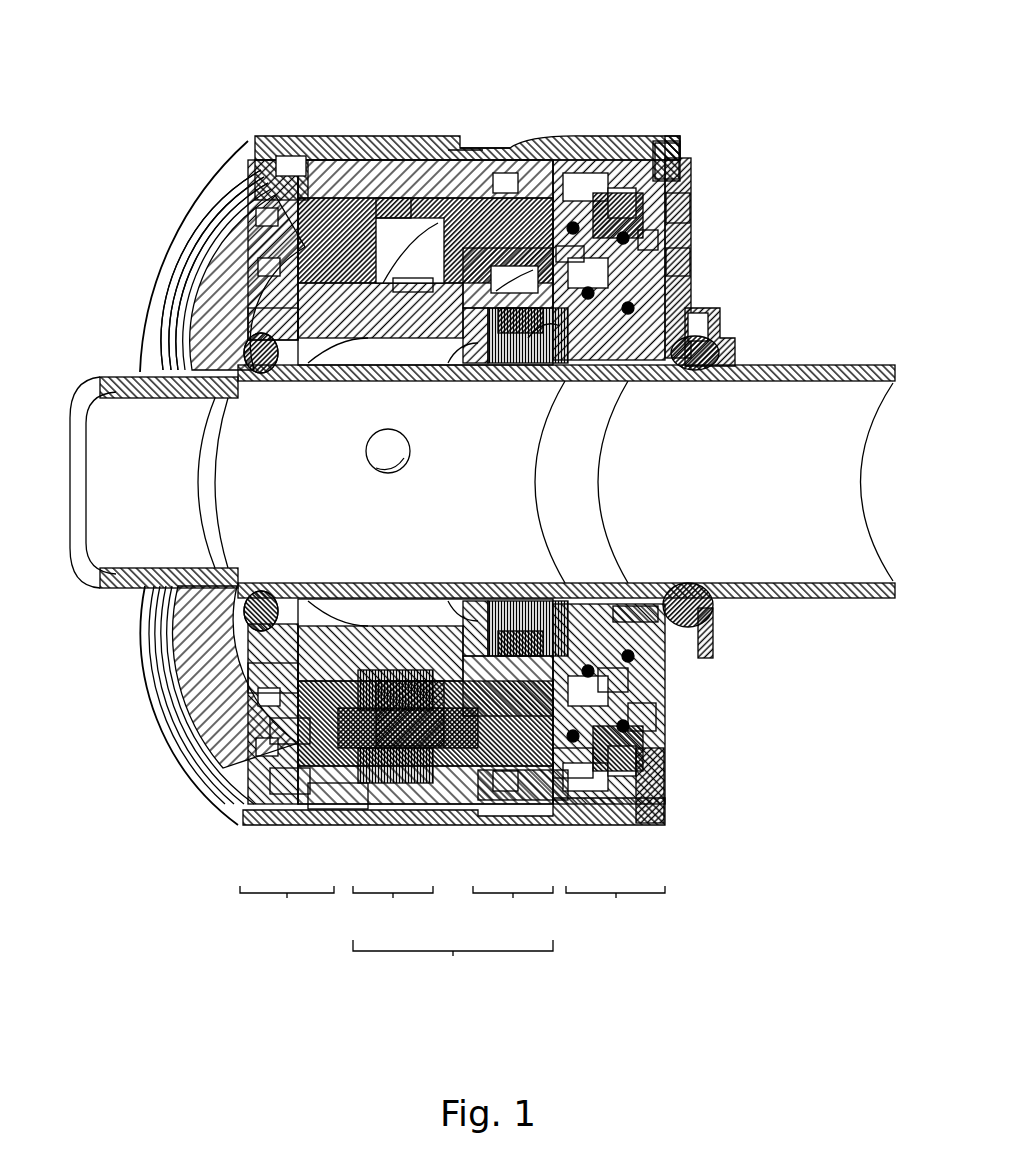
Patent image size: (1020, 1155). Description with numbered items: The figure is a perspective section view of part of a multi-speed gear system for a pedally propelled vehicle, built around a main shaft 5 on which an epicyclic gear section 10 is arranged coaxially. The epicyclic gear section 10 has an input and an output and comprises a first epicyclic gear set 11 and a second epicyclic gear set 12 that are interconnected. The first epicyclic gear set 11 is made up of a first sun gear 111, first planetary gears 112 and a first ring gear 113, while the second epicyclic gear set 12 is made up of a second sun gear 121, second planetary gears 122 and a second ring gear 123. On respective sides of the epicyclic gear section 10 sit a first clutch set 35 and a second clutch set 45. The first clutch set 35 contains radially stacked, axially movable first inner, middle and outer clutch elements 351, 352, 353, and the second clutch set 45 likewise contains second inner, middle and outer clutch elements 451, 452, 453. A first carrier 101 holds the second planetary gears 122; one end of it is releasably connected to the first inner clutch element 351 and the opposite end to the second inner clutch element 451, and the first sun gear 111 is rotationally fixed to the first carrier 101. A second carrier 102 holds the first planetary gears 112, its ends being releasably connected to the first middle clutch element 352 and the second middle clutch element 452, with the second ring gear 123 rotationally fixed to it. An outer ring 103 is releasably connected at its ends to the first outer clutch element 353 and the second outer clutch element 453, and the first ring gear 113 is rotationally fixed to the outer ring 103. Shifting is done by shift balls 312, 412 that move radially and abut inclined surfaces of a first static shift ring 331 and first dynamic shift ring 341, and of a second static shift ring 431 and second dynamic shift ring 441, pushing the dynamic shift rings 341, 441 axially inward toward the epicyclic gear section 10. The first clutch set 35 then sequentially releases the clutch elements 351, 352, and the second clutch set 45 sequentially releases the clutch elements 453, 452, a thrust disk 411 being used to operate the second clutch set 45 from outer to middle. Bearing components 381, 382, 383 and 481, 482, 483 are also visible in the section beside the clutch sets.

The main shaft 5 is at (760, 357).
The epicyclic gear section 10 is at (453, 960).
The first epicyclic gear set 11 is at (393, 904).
The second epicyclic gear set 12 is at (513, 904).
The first clutch set 35 is at (287, 904).
The second clutch set 45 is at (615, 904).
The first carrier 101 is at (497, 142).
The second carrier 102 is at (477, 143).
The outer ring 103 is at (457, 142).
The first sun gear 111 is at (400, 277).
The first planetary gears 112 is at (363, 783).
The first ring gear 113 is at (385, 190).
The second sun gear 121 is at (562, 245).
The second planetary gears 122 is at (567, 760).
The second ring gear 123 is at (535, 325).
The first shift balls 312 is at (212, 605).
The first static shift ring 331 is at (227, 337).
The first dynamic shift ring 341 is at (267, 322).
The first inner clutch element 351 is at (247, 267).
The first middle clutch element 352 is at (240, 230).
The first outer clutch element 353 is at (257, 200).
The bearing inner race 381 is at (257, 670).
The bearing ball 382 is at (290, 723).
The bearing outer race 383 is at (287, 773).
The thrust disk 411 is at (663, 198).
The second shift balls 412 is at (720, 603).
The second static shift ring 431 is at (742, 315).
The second dynamic shift ring 441 is at (710, 320).
The second inner clutch element 451 is at (688, 252).
The second middle clutch element 452 is at (643, 233).
The second outer clutch element 453 is at (667, 153).
The bearing inner race 481 is at (607, 673).
The bearing ball 482 is at (637, 710).
The bearing outer race 483 is at (642, 772).